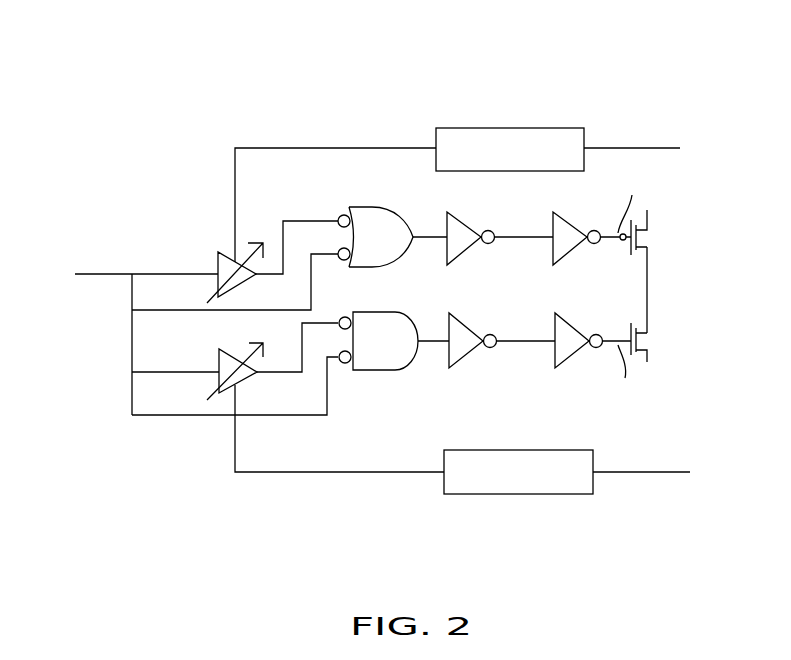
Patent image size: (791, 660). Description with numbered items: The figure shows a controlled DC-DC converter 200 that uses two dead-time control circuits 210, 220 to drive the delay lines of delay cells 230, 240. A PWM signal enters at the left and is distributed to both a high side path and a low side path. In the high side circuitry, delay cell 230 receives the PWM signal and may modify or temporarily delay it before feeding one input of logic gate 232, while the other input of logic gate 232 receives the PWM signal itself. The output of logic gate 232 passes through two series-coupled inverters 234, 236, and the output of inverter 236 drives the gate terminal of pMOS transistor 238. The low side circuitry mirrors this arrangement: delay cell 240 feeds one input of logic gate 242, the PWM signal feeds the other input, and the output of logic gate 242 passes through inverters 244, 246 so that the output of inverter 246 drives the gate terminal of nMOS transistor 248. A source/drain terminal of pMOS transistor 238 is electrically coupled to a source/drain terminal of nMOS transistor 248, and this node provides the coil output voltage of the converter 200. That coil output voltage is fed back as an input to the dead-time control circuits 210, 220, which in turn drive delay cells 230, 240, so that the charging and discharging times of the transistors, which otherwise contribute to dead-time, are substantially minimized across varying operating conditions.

The controlled DC-DC converter 200 is at (641, 88).
The dead-time control circuit 210 is at (543, 128).
The dead-time control circuit 220 is at (558, 494).
The delay cell 230 is at (237, 268).
The logic gate 232 is at (382, 205).
The inverter 234 is at (465, 217).
The inverter 236 is at (572, 252).
The pMOS transistor 238 is at (649, 221).
The delay cell 240 is at (242, 383).
The logic gate 242 is at (388, 370).
The inverter 244 is at (468, 353).
The inverter 246 is at (573, 355).
The nMOS transistor 248 is at (648, 362).